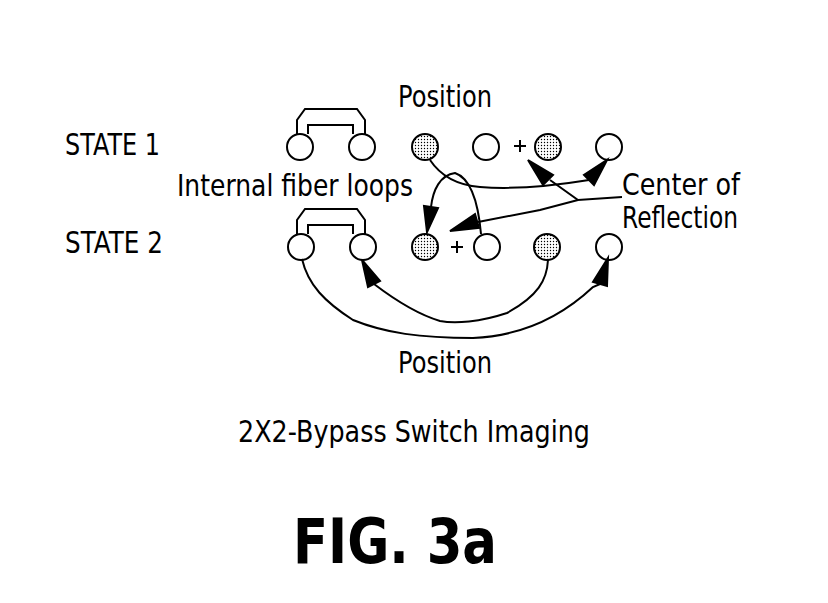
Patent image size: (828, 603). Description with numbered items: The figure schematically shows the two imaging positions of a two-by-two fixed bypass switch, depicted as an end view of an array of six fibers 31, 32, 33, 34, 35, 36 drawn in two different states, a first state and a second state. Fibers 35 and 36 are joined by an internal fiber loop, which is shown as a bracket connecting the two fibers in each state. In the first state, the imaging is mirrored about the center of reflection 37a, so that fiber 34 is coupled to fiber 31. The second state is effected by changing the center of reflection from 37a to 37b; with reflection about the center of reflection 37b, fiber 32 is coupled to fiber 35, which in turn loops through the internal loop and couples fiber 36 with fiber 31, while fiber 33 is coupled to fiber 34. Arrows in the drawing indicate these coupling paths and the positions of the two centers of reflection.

The fiber 31 is at (605, 134).
The fiber 32 is at (549, 134).
The fiber 33 is at (488, 134).
The fiber 34 is at (412, 137).
The fiber 35 is at (374, 134).
The fiber 36 is at (288, 136).
The center of reflection 37a is at (520, 142).
The center of reflection 37b is at (463, 256).